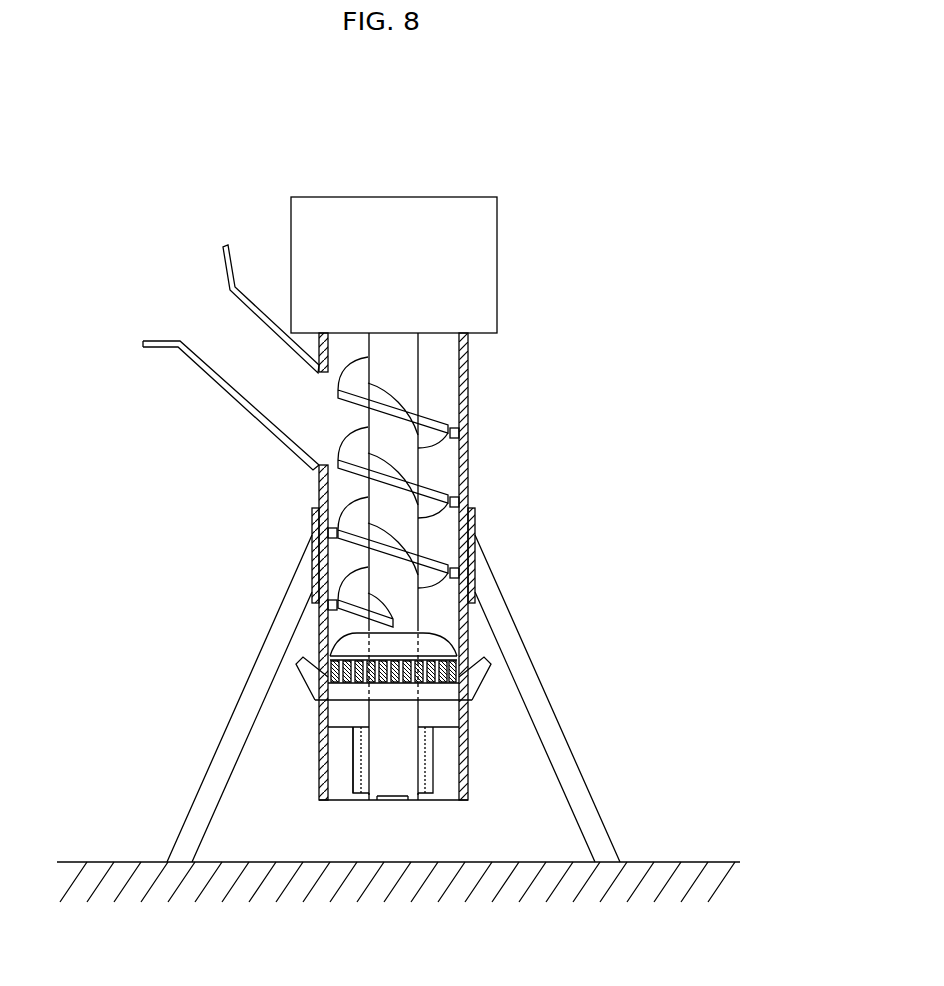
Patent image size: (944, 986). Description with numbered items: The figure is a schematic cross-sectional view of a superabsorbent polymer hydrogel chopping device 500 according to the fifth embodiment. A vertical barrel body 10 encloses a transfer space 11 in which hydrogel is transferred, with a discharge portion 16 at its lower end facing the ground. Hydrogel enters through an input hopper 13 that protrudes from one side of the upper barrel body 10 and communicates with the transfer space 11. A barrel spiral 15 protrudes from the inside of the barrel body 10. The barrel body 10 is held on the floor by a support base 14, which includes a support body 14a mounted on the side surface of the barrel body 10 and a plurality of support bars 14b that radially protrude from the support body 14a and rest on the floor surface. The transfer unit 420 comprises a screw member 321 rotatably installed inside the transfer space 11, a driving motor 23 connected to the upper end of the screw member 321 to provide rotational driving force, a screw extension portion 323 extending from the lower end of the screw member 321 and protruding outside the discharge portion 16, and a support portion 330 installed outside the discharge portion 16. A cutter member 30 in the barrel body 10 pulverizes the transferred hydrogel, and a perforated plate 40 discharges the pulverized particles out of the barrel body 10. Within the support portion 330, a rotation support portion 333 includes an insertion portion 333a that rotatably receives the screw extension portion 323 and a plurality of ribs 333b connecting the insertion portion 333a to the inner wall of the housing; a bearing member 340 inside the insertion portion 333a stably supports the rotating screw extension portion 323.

The superabsorbent polymer hydrogel chopping device 500 is at (465, 163).
The driving motor 23 is at (485, 276).
The transfer unit 420 is at (562, 268).
The screw member 321 is at (405, 355).
The transfer space 11 is at (447, 377).
The barrel body 10 is at (464, 471).
The barrel spiral 15 is at (452, 446).
The input hopper 13 is at (218, 380).
The support body 14a is at (478, 567).
The support base 14 is at (590, 572).
The support bars 14b is at (512, 635).
The cutter member 30 is at (348, 637).
The perforated plate 40 is at (345, 678).
The discharge portion 16 is at (483, 684).
The support portion 330 is at (495, 748).
The rotation support portion 333 is at (146, 728).
The insertion portion 333a is at (357, 742).
The ribs 333b is at (340, 771).
The bearing member 340 is at (382, 797).
The screw extension portion 323 is at (397, 770).